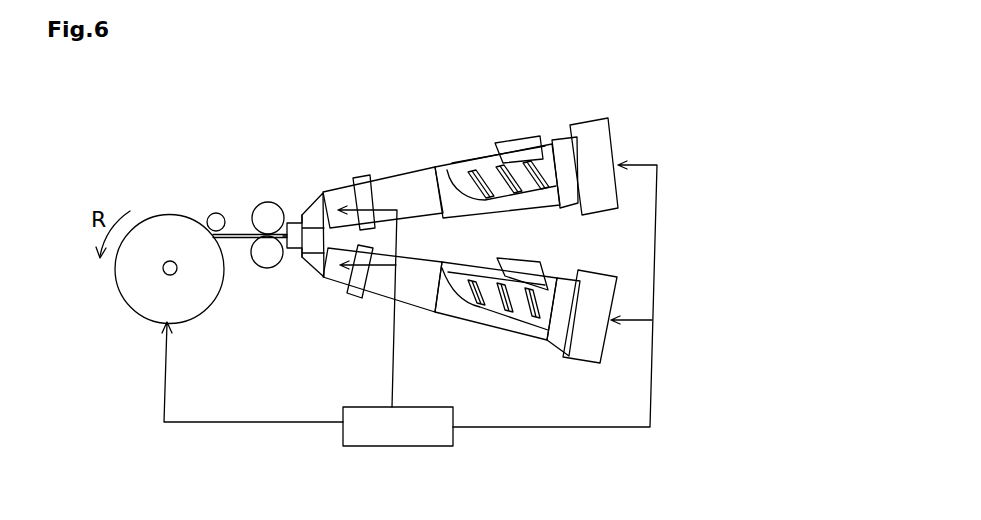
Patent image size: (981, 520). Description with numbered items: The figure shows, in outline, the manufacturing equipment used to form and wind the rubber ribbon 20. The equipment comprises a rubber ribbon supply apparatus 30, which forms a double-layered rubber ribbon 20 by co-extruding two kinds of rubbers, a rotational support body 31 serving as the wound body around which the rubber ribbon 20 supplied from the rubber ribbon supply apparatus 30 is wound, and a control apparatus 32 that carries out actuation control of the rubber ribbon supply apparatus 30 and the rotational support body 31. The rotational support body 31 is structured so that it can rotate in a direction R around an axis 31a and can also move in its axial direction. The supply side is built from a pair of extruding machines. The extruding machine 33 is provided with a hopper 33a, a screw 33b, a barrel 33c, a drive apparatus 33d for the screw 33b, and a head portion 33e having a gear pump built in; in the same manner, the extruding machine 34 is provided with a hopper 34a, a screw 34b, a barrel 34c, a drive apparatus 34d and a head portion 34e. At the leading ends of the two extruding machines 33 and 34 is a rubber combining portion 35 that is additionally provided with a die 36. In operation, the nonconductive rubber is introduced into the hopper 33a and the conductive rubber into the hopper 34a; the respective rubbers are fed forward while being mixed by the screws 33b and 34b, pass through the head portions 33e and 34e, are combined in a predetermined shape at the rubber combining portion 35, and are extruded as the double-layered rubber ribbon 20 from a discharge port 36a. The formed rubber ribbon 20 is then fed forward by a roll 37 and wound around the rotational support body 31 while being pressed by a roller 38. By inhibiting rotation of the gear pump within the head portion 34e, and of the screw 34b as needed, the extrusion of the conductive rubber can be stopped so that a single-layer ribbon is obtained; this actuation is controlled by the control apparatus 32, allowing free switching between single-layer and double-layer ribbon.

The rubber ribbon supply apparatus 30 is at (532, 360).
The rotational support body 31 is at (162, 217).
The axis 31a is at (163, 274).
The control apparatus 32 is at (387, 438).
The extruding machine 33 is at (402, 173).
The hopper 33a is at (528, 138).
The screw 33b is at (488, 177).
The barrel 33c is at (450, 163).
The drive apparatus 33d is at (593, 127).
The head portion 33e is at (344, 187).
The extruding machine 34 is at (417, 308).
The hopper 34a is at (528, 271).
The screw 34b is at (497, 304).
The barrel 34c is at (477, 266).
The drive apparatus 34d is at (603, 281).
The head portion 34e is at (342, 296).
The rubber combining portion 35 is at (313, 212).
The die 36 is at (284, 203).
The discharge port 36a is at (286, 252).
The roll 37 is at (267, 268).
The roller 38 is at (207, 213).
The rubber ribbon 20 is at (239, 224).